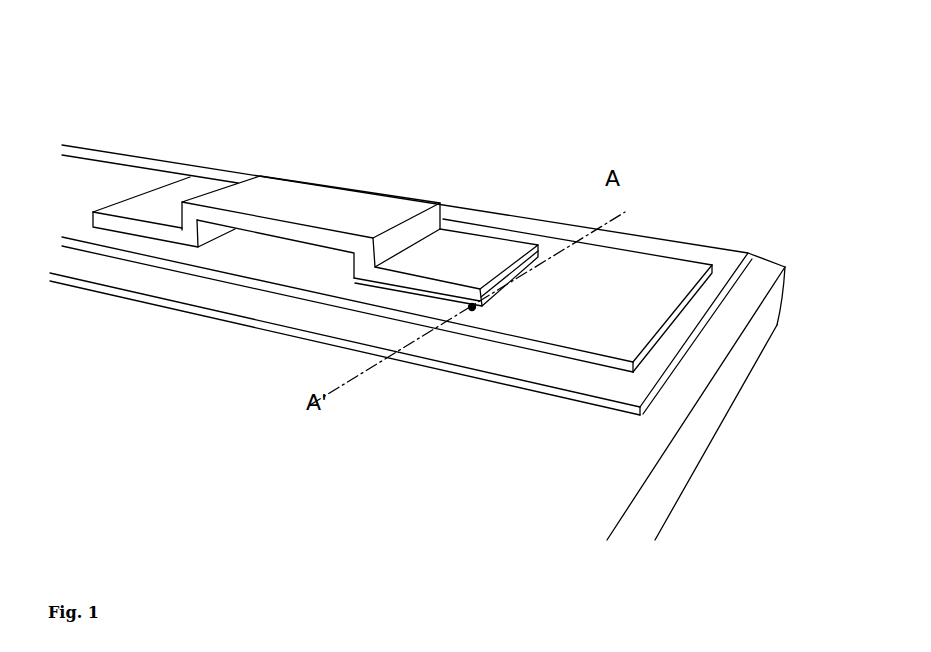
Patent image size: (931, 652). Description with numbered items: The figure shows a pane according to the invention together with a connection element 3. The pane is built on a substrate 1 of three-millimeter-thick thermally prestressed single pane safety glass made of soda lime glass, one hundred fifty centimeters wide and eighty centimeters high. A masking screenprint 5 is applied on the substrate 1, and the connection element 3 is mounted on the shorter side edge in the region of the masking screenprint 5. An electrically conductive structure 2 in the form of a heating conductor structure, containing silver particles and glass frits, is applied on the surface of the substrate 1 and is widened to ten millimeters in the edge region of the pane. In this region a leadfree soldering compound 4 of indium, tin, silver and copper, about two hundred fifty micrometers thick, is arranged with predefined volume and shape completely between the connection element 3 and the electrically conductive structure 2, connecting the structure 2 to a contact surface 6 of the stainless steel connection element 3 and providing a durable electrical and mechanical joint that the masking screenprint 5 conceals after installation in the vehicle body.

The substrate 1 is at (697, 425).
The electrically conductive structure 2 is at (665, 282).
The connection element 3 is at (455, 250).
The leadfree soldering compound 4 is at (478, 292).
The masking screenprint 5 is at (695, 313).
The contact surface 6 is at (472, 307).